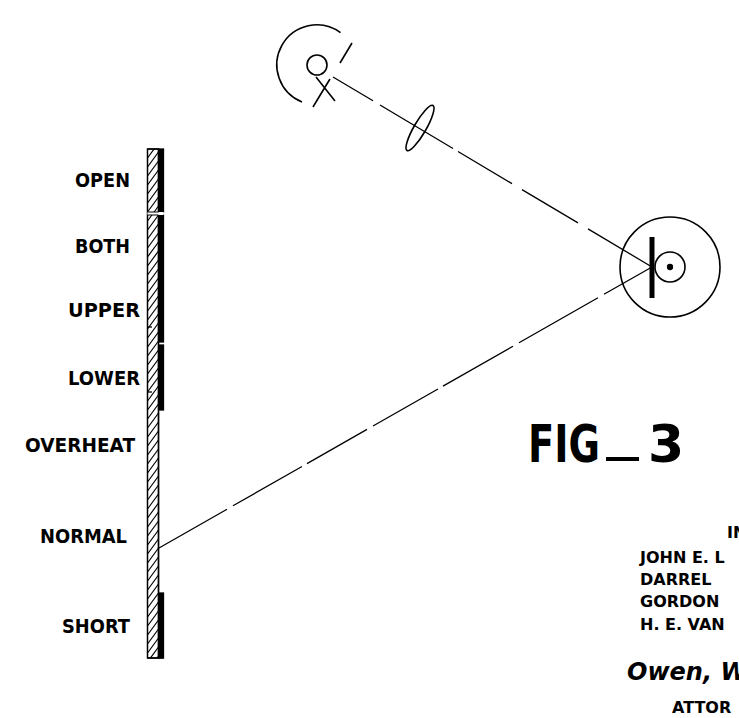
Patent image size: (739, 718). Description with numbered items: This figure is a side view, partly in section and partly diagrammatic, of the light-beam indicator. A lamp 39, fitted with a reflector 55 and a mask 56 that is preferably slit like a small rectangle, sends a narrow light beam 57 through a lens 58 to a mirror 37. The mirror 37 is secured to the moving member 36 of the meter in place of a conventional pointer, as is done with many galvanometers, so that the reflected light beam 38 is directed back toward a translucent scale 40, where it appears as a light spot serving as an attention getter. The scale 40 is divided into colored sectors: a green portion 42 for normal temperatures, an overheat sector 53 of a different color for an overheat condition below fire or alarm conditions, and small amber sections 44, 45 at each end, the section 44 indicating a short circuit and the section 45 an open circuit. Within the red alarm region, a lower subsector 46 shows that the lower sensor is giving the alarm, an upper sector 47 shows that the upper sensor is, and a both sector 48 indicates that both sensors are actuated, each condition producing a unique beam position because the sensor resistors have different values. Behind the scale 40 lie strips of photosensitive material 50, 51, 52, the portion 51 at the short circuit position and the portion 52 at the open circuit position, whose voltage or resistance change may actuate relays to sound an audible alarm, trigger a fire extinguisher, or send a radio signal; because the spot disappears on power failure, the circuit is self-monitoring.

The moving member 36 is at (685, 257).
The mirror 37 is at (648, 238).
The light beam 38 is at (383, 418).
The lamp 39 is at (329, 92).
The translucent scale 40 is at (162, 143).
The green portion 42 is at (160, 512).
The amber section 44 is at (146, 660).
The amber section 45 is at (147, 167).
The lower subsector 46 is at (147, 392).
The upper sector 47 is at (147, 327).
The both sector 48 is at (147, 232).
The strip of photosensitive material 50 is at (165, 252).
The strip of photosensitive material 51 is at (160, 632).
The strip of photosensitive material 52 is at (166, 183).
The overheat sector 53 is at (160, 455).
The reflector 55 is at (285, 62).
The mask 56 is at (345, 59).
The narrow light beam 57 is at (397, 112).
The lens 58 is at (418, 147).